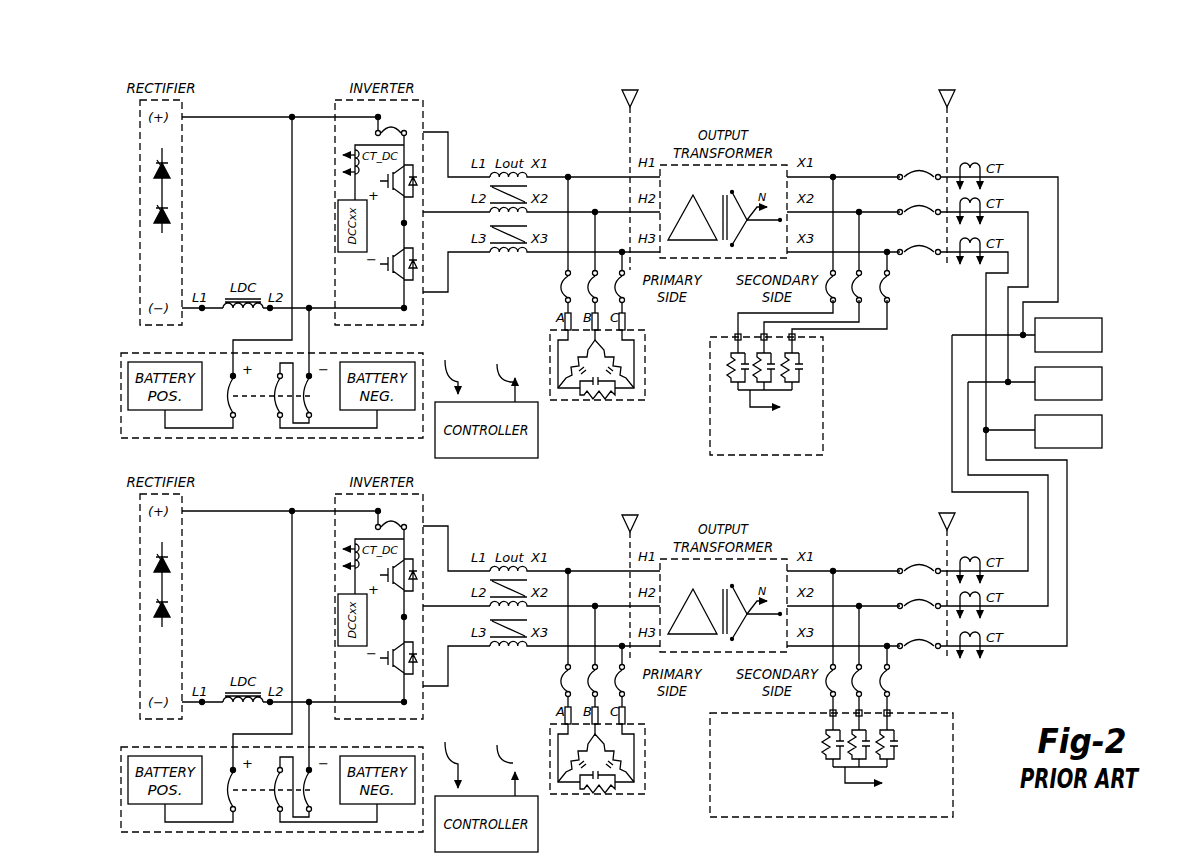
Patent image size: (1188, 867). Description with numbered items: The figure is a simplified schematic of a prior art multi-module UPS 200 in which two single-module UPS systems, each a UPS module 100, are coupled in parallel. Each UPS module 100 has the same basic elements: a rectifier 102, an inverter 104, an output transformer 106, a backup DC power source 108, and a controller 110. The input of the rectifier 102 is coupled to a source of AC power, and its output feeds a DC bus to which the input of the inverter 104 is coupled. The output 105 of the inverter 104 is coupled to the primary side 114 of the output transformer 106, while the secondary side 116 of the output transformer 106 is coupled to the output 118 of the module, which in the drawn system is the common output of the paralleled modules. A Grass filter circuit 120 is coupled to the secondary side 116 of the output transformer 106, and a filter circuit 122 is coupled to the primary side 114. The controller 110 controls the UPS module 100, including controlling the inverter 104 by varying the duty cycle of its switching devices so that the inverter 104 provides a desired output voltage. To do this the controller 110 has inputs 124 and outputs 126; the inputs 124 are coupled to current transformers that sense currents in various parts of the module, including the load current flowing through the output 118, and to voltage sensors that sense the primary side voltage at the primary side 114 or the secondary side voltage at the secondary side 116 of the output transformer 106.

The UPS module 100 is at (106, 457).
The multi-module UPS 200 is at (86, 178).
The rectifier 102 is at (182, 104).
The inverter 104 is at (335, 112).
The output of inverter 105 is at (433, 112).
The output transformer 106 is at (782, 164).
The backup DC power source 108 is at (121, 408).
The controller 110 is at (538, 455).
The primary side of output transformer 114 is at (646, 148).
The secondary side of output transformer 116 is at (825, 142).
The output of UPS module 118 is at (1097, 311).
The Grass filter circuit 120 is at (823, 425).
The filter circuit 122 is at (645, 388).
The inputs of controller 124 is at (449, 564).
The outputs of controller 126 is at (501, 570).